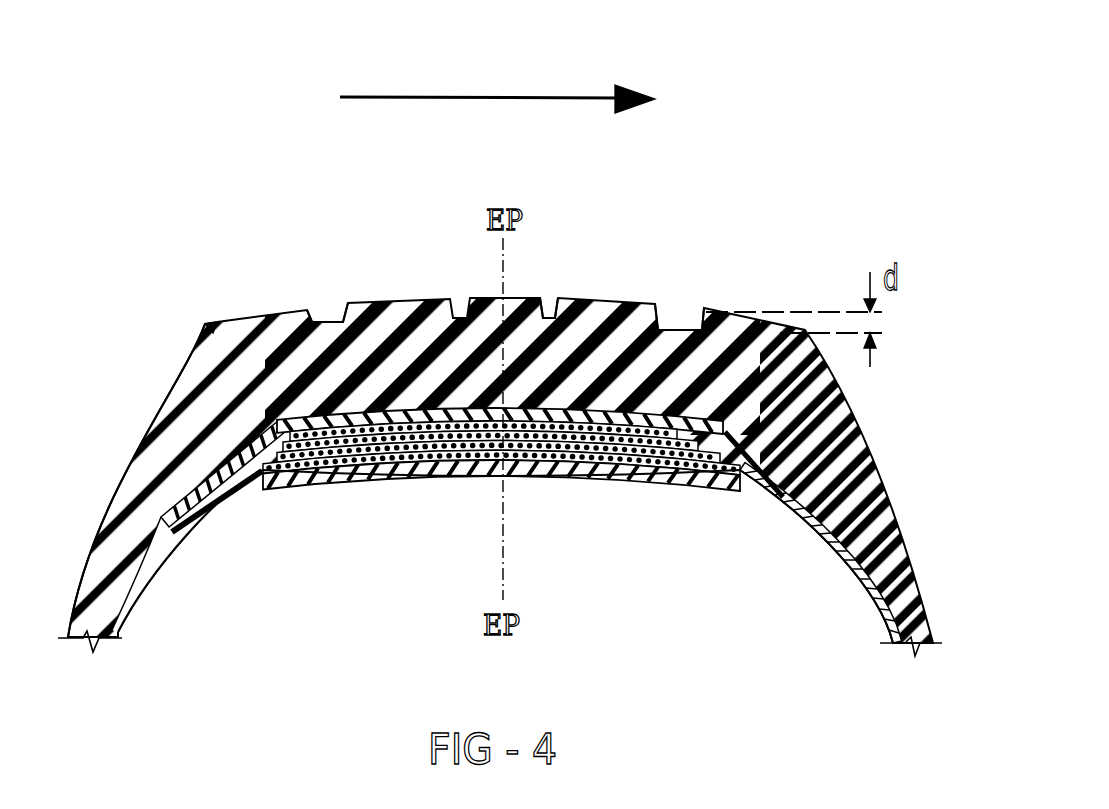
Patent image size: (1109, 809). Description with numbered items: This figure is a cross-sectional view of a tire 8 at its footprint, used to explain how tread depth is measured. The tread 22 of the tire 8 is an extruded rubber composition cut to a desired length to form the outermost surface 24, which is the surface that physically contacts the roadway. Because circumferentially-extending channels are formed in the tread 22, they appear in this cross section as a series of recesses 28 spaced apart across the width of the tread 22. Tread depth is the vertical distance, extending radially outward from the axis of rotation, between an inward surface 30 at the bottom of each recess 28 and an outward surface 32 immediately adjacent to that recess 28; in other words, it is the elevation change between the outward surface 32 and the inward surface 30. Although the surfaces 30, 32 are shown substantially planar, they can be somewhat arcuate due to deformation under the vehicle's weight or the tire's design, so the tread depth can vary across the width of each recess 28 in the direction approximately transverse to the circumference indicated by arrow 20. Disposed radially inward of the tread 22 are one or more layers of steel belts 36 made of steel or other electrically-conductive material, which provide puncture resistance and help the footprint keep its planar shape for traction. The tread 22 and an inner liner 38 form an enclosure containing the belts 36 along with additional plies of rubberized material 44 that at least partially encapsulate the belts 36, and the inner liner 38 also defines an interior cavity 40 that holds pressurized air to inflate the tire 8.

The tire 8 is at (883, 185).
The arrow 20 is at (358, 96).
The tread 22 is at (783, 378).
The outermost surface 24 is at (217, 318).
The recess 28 is at (322, 312).
The inward surface 30 is at (673, 330).
The outward surface 32 is at (583, 298).
The steel belts 36 is at (338, 478).
The inner liner 38 is at (418, 472).
The interior cavity 40 is at (710, 581).
The plies of rubberized material 44 is at (781, 490).